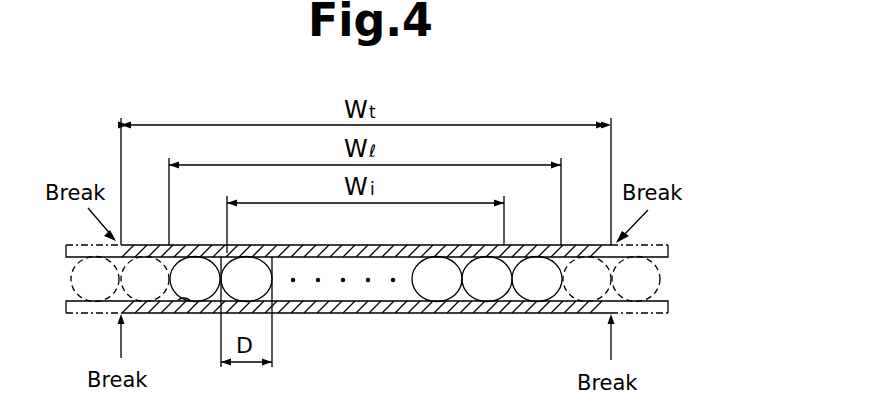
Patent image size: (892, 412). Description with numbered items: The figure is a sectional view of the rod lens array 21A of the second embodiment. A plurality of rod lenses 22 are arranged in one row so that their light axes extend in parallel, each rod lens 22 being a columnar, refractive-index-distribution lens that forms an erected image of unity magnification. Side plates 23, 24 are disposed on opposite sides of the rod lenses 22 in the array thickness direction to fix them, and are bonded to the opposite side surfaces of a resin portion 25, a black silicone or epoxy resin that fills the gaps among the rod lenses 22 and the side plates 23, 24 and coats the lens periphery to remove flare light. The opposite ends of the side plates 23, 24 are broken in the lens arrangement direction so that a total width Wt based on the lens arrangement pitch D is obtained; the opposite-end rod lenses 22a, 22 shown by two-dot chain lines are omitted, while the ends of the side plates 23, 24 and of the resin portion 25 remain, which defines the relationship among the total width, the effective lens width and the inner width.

The rod lens array 21A is at (382, 315).
The rod lens 22 is at (193, 248).
The opposite-end rod lens 22a is at (140, 308).
The side plate 23 is at (138, 247).
The side plate 24 is at (185, 313).
The resin portion 25 is at (341, 293).